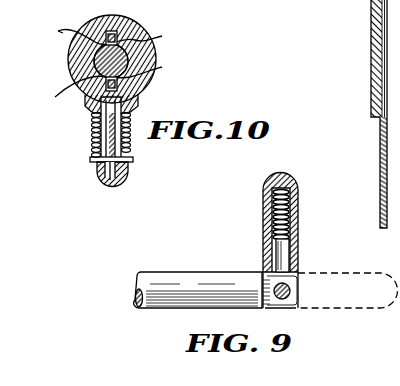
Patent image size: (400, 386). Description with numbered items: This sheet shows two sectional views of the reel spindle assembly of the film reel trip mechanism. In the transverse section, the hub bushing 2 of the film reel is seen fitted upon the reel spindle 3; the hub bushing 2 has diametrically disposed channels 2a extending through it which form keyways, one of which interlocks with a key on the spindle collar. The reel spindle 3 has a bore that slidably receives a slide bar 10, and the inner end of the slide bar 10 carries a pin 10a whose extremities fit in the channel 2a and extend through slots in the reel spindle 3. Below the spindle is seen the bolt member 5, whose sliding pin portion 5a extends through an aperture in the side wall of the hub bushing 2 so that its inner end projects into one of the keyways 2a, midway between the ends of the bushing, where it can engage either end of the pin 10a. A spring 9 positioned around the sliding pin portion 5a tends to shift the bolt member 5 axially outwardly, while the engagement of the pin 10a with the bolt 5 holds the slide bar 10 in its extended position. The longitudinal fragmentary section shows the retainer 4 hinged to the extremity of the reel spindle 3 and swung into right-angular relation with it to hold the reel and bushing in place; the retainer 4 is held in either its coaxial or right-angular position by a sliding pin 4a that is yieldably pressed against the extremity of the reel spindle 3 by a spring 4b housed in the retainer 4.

In FIG. 10, the hub bushing 2 is at (148, 56).
In FIG. 10, the channels 2a is at (62, 102).
In FIG. 10, the reel spindle 3 is at (148, 40).
In FIG. 9, the reel spindle 3 is at (192, 284).
In FIG. 9, the retainer 4 is at (297, 212).
In FIG. 9, the sliding pin 4a is at (283, 260).
In FIG. 9, the spring 4b is at (297, 198).
In FIG. 10, the bolt member 5 is at (100, 163).
In FIG. 10, the sliding pin portion 5a is at (95, 119).
In FIG. 10, the spring 9 is at (125, 136).
In FIG. 10, the slide bar 10 is at (153, 75).
In FIG. 10, the pin 10a is at (131, 23).